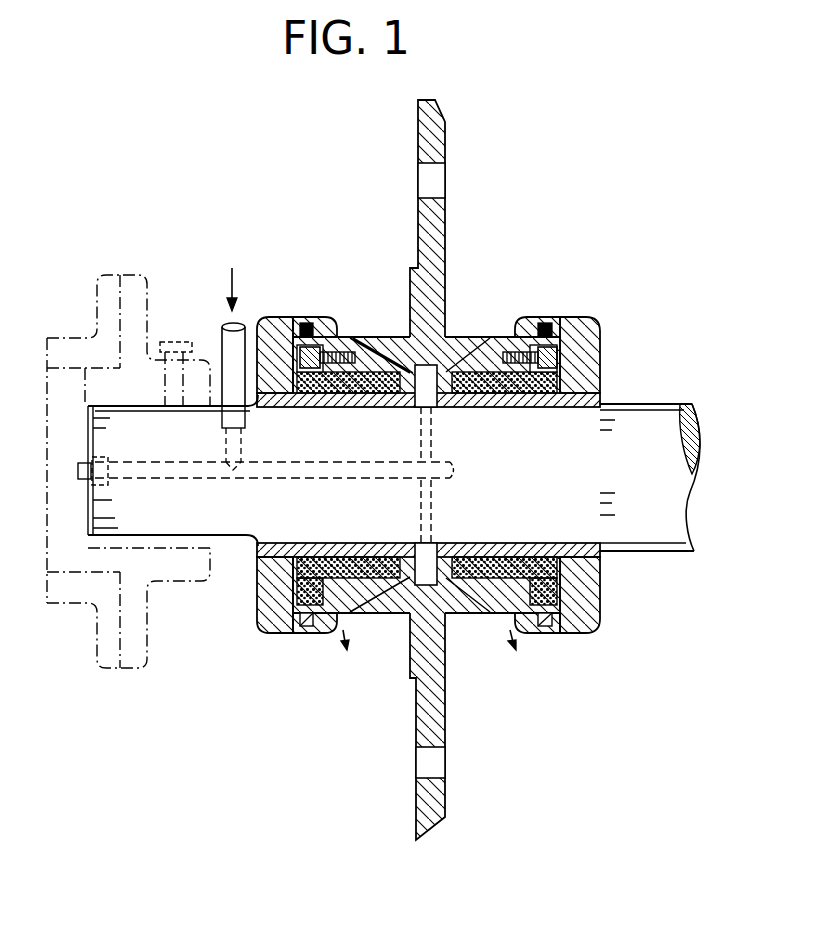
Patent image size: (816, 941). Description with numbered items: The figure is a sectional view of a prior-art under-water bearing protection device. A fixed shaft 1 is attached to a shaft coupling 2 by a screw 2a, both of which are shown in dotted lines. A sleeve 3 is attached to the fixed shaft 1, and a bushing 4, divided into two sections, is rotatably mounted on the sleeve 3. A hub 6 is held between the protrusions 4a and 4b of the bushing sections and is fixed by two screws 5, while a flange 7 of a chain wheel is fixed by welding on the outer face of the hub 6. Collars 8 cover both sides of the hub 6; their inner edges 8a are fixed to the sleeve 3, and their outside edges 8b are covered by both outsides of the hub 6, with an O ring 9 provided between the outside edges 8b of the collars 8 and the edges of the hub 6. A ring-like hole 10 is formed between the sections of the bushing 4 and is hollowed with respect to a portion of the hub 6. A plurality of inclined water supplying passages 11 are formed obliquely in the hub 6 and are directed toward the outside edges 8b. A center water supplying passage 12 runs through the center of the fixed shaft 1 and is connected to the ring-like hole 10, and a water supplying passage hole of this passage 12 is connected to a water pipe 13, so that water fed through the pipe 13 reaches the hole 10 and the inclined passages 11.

The fixed shaft 1 is at (660, 415).
The shaft coupling 2 is at (74, 338).
The screw 2a is at (172, 342).
The sleeve 3 is at (524, 405).
The bushing 4 is at (482, 386).
The protrusion 4a is at (297, 320).
The protrusion 4b is at (558, 345).
The screw 5 is at (557, 358).
The hub 6 is at (455, 348).
The flange 7 is at (437, 141).
The collar 8 is at (450, 454).
The inner edge 8a is at (276, 385).
The outside edge 8b is at (347, 327).
The O ring 9 is at (307, 322).
The ring-like hole 10 is at (425, 387).
The inclined water supplying passage 11 is at (386, 345).
The center water supplying passage 12 is at (166, 470).
The water pipe 13 is at (223, 340).